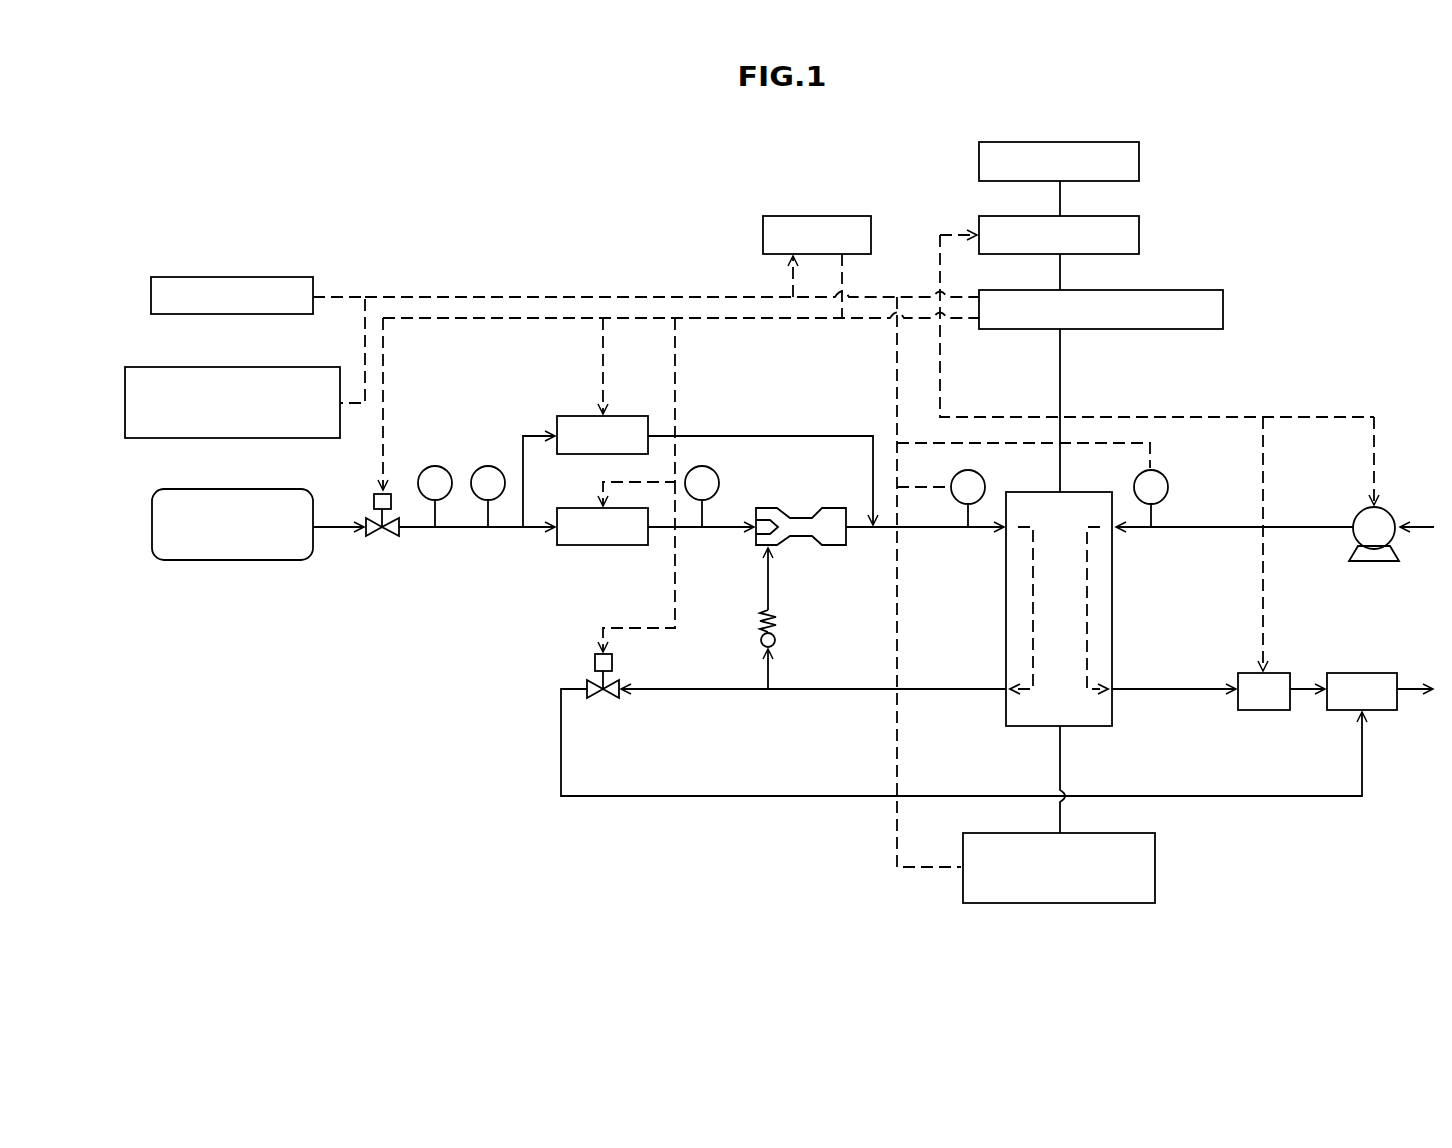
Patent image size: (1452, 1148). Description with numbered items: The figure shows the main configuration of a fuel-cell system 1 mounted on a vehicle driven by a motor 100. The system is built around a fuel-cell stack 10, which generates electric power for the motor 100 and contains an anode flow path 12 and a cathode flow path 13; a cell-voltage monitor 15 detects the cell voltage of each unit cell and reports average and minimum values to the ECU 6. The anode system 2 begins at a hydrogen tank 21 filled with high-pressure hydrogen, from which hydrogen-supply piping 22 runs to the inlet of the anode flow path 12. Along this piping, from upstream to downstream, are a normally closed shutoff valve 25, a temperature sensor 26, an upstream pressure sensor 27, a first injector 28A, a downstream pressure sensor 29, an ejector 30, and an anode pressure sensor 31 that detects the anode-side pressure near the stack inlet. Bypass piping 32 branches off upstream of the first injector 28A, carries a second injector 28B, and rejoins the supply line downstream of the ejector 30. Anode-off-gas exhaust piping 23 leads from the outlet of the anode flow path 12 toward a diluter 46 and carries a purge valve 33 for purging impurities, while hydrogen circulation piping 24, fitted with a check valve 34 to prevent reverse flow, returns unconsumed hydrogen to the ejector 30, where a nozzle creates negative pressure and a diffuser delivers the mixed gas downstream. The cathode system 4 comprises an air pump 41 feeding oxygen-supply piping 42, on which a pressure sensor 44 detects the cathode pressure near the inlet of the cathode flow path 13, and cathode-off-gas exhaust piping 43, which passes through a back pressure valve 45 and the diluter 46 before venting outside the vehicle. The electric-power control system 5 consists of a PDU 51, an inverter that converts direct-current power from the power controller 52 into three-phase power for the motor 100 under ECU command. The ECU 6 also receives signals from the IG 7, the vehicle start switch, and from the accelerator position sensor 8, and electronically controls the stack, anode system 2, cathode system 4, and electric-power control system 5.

The fuel-cell system 1 is at (596, 196).
The anode system 2 is at (447, 599).
The cathode system 4 is at (1393, 462).
The electric-power control system 5 is at (1275, 193).
The ECU 6 is at (851, 216).
The IG 7 is at (287, 277).
The accelerator position sensor 8 is at (287, 367).
The fuel-cell stack 10 is at (1112, 705).
The anode flow path 12 is at (1033, 599).
The cathode flow path 13 is at (1087, 599).
The cell-voltage monitor 15 is at (1155, 870).
The hydrogen tank 21 is at (288, 489).
The hydrogen-supply piping 22 is at (503, 527).
The anode-off-gas exhaust piping 23 is at (880, 689).
The hydrogen circulation piping 24 is at (768, 585).
The shutoff valve 25 is at (384, 536).
The temperature sensor 26 is at (438, 466).
The upstream pressure sensor 27 is at (491, 466).
The first injector 28A is at (577, 508).
The second injector 28B is at (625, 416).
The downstream pressure sensor 29 is at (719, 483).
The ejector 30 is at (833, 508).
The anode pressure sensor 31 is at (980, 476).
The bypass piping 32 is at (755, 436).
The purge valve 33 is at (605, 699).
The check valve 34 is at (778, 626).
The air pump 41 is at (1388, 513).
The oxygen-supply piping 42 is at (1297, 527).
The cathode-off-gas exhaust piping 43 is at (1175, 689).
The pressure sensor 44 is at (1168, 486).
The back pressure valve 45 is at (1278, 673).
The diluter 46 is at (1377, 673).
The PDU 51 is at (1139, 239).
The power controller 52 is at (1223, 313).
The motor 100 is at (1139, 166).